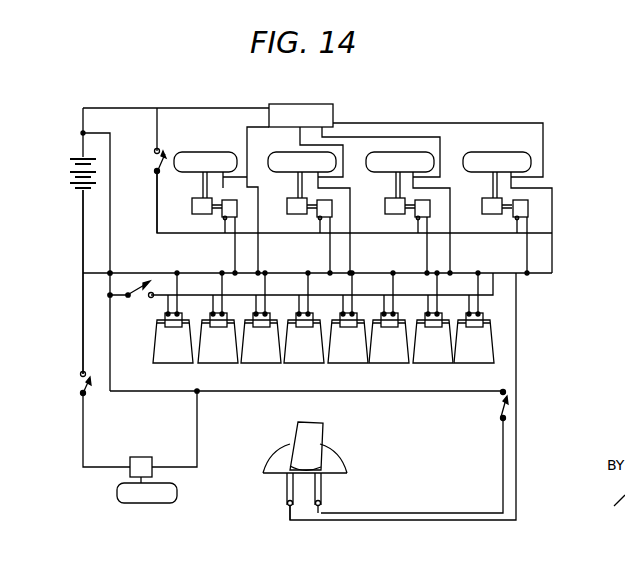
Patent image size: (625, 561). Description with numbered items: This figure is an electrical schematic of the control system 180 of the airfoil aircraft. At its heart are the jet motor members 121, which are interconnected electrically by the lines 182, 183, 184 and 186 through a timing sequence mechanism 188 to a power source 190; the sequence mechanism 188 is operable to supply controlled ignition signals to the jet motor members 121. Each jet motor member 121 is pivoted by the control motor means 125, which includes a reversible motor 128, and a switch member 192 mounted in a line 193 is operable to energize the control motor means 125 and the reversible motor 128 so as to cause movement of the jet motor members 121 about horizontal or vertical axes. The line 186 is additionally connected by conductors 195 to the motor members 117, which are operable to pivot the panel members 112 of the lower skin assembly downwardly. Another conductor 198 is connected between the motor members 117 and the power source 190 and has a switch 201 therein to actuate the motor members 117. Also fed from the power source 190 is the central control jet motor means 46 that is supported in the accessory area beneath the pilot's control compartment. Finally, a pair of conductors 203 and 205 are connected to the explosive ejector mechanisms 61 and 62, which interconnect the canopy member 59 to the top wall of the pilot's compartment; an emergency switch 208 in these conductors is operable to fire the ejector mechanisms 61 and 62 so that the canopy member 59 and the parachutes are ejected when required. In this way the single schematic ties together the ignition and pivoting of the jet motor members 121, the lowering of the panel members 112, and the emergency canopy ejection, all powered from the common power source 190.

The control system 180 is at (151, 93).
The line 182 is at (183, 107).
The line 183 is at (247, 141).
The timing sequence mechanism 188 is at (305, 118).
The power source 190 is at (75, 157).
The switch member 192 is at (160, 162).
The line 193 is at (157, 192).
The jet motor member 121 is at (200, 163).
The reversible motor 128 is at (393, 206).
The control motor means 125 is at (531, 211).
The line 184 is at (260, 256).
The line 186 is at (99, 275).
The switch 201 is at (143, 298).
The conductor 198 is at (228, 294).
The conductors 195 is at (310, 291).
The motor member 117 is at (440, 330).
The panel member 112 is at (303, 357).
The central control jet motor means 46 is at (164, 493).
The emergency switch 208 is at (504, 407).
The conductor 203 is at (410, 512).
The conductor 205 is at (518, 495).
The canopy member 59 is at (335, 458).
The explosive ejector mechanism 62 is at (322, 481).
The explosive ejector mechanism 61 is at (289, 484).